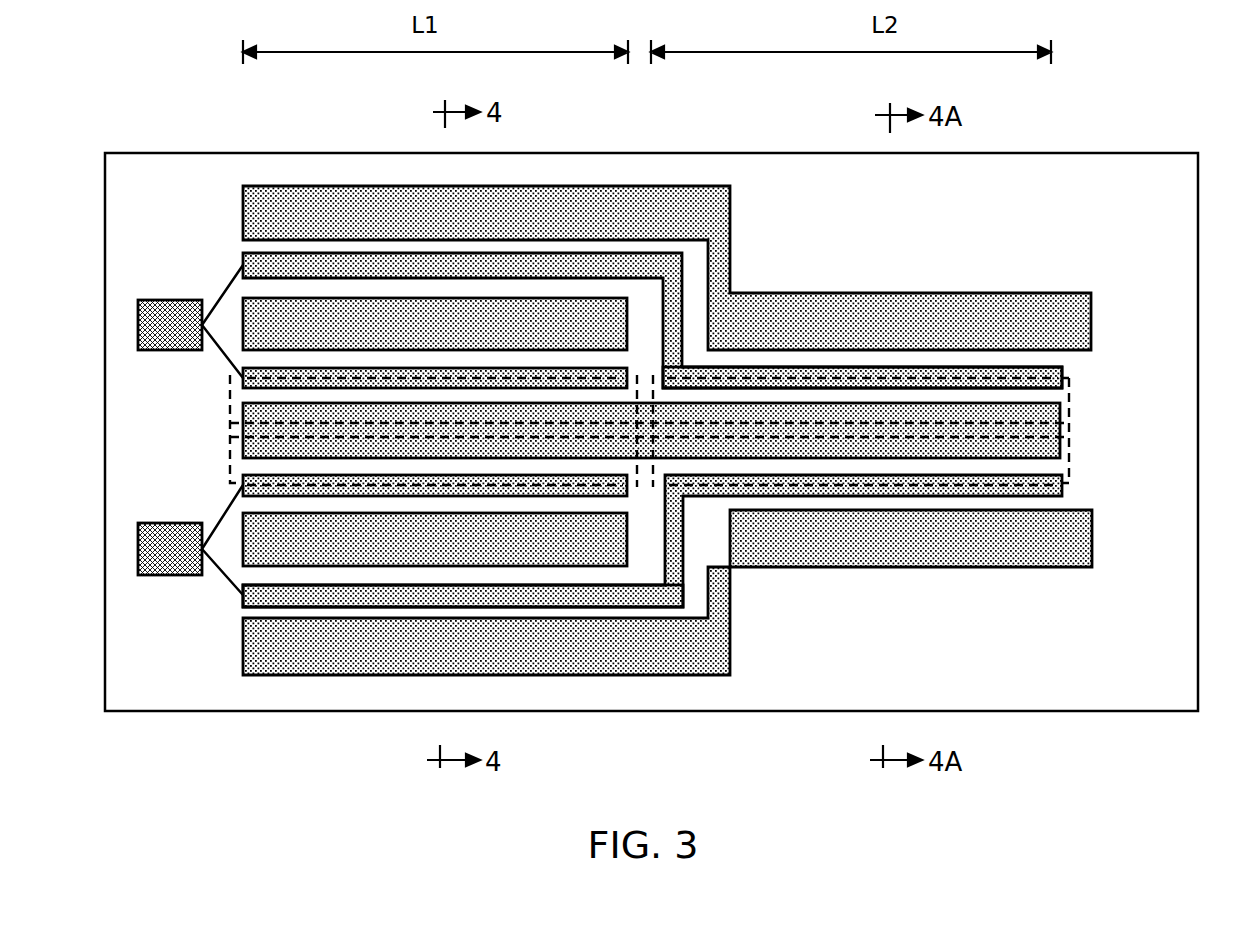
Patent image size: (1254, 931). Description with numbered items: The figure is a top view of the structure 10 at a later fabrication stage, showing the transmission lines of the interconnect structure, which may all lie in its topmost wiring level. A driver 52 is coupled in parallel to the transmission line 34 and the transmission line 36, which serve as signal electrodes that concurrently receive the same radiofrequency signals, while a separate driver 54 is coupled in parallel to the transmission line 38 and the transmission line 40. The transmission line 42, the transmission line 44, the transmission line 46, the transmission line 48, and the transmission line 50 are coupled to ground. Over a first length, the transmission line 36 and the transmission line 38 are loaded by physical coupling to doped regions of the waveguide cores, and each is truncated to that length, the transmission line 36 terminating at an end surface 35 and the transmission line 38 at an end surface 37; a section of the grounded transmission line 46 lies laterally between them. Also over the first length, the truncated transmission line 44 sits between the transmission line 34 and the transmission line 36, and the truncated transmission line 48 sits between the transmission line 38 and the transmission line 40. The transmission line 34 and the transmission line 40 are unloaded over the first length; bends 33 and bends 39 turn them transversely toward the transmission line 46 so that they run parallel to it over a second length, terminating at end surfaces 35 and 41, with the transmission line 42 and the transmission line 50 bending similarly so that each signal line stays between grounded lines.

The structure 10 is at (234, 113).
The bends 33 is at (686, 276).
The transmission line 34 is at (983, 373).
The end surface 35 is at (1062, 370).
The transmission line 36 is at (308, 372).
The end surface 37 is at (627, 490).
The transmission line 38 is at (285, 488).
The bends 39 is at (694, 572).
The transmission line 40 is at (937, 490).
The end surface 41 is at (1062, 490).
The transmission line 42 is at (1058, 330).
The transmission line 44 is at (573, 320).
The transmission line 46 is at (1042, 432).
The transmission line 48 is at (513, 545).
The transmission line 50 is at (1062, 548).
The driver 52 is at (172, 317).
The driver 54 is at (178, 552).